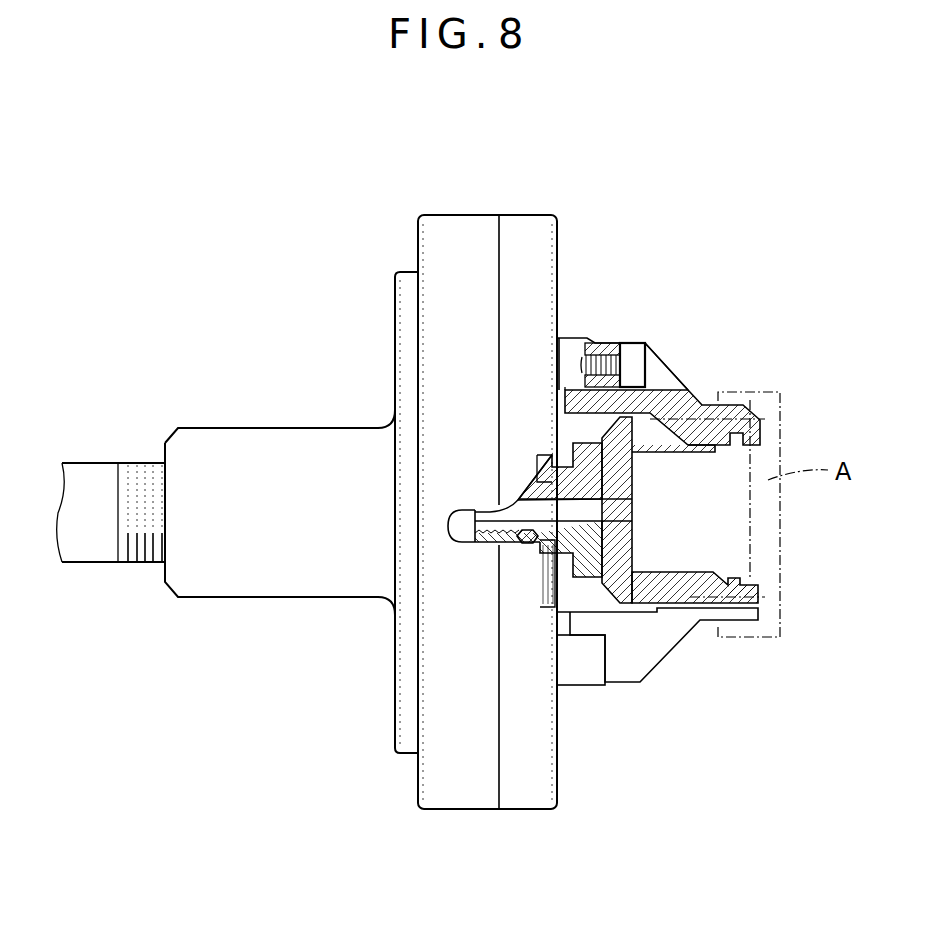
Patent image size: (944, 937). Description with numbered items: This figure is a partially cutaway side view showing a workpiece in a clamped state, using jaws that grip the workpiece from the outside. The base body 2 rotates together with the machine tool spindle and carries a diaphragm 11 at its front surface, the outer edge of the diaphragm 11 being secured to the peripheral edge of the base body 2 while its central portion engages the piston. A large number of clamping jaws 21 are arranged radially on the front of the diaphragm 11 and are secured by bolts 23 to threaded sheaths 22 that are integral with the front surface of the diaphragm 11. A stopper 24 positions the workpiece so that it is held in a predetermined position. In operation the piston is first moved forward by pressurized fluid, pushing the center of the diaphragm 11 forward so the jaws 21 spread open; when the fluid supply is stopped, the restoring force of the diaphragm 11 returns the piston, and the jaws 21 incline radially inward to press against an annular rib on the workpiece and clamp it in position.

The base body 2 is at (477, 518).
The diaphragm 11 is at (528, 787).
The clamping jaws 21 is at (693, 420).
The threaded sheaths 22 is at (595, 340).
The bolts 23 is at (622, 342).
The stopper 24 is at (755, 597).